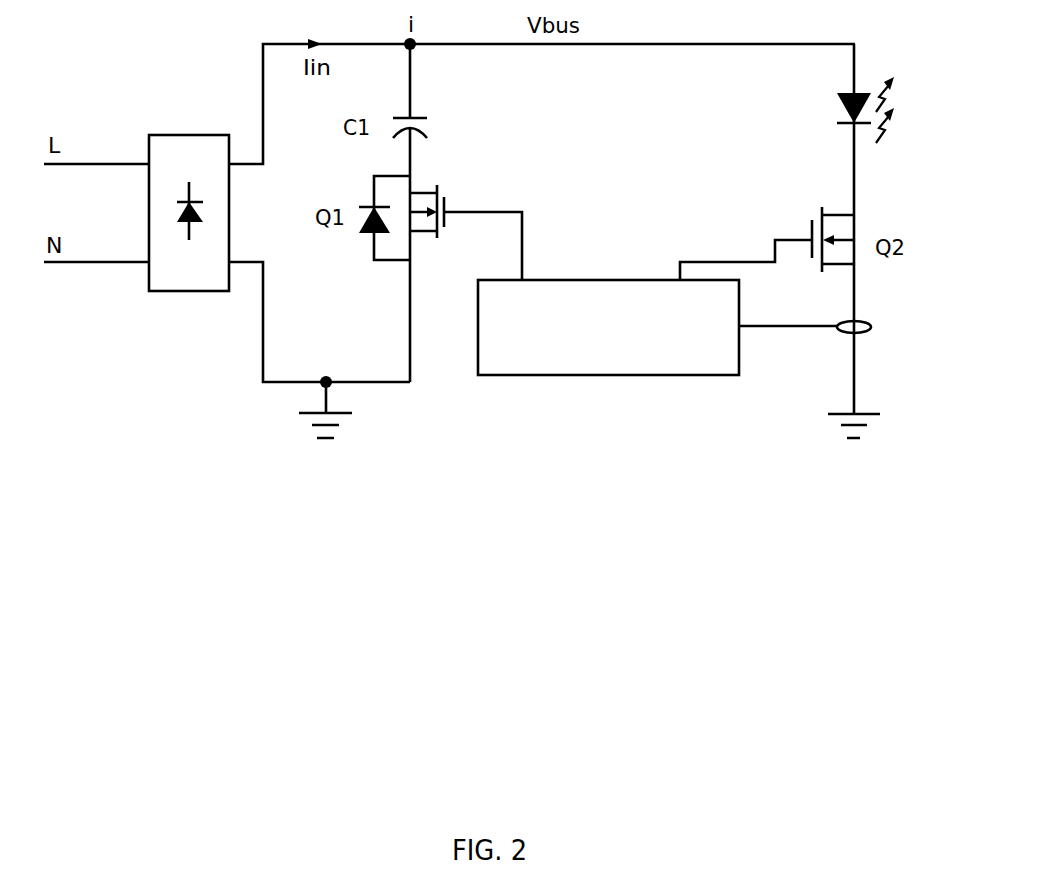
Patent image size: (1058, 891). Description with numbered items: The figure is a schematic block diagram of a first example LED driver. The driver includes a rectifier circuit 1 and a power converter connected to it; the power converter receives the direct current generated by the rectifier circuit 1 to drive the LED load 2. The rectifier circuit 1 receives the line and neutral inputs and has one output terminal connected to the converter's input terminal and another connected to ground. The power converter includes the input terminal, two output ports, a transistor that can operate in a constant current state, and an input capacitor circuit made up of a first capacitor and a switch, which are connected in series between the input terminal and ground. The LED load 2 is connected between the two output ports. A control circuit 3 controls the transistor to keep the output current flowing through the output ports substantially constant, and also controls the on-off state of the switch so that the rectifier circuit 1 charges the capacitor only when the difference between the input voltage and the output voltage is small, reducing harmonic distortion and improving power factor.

The rectifier circuit 1 is at (178, 137).
The LED load 2 is at (922, 62).
The control circuit 3 is at (578, 280).